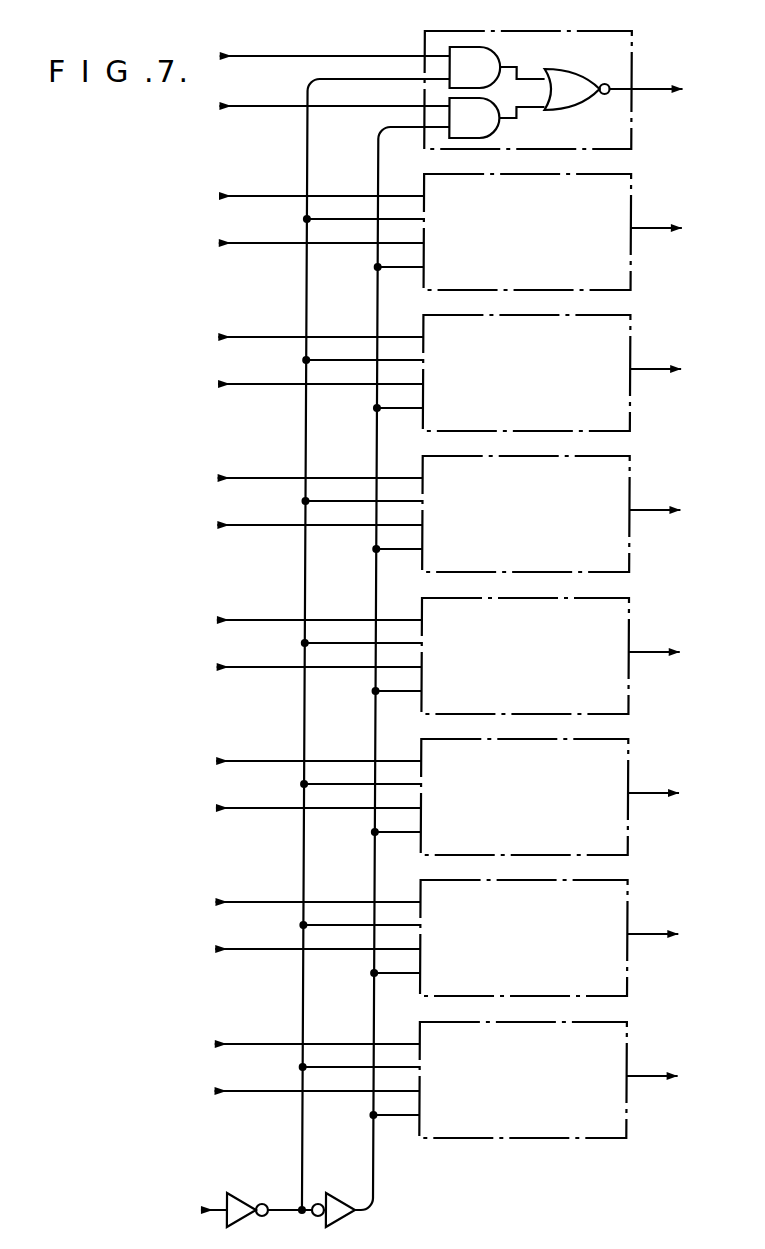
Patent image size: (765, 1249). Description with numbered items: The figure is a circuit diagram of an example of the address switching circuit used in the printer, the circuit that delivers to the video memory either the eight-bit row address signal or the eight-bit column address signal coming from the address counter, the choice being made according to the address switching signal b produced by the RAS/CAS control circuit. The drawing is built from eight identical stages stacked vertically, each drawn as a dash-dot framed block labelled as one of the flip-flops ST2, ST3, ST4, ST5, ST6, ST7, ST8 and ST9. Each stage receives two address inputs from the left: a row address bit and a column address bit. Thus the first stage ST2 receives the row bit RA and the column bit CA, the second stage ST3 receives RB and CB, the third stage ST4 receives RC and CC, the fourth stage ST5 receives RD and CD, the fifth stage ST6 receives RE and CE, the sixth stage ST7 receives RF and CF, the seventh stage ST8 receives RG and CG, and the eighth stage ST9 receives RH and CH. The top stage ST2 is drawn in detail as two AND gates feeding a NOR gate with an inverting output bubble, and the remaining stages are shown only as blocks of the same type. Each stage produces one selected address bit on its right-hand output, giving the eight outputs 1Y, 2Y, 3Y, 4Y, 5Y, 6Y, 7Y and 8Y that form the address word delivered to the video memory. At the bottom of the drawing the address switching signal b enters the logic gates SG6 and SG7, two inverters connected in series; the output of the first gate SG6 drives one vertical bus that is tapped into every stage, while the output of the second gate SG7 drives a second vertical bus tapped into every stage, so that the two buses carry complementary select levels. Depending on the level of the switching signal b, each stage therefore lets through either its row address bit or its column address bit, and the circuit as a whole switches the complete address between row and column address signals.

The flip-flop ST2 is at (533, 90).
The flip-flop ST3 is at (472, 232).
The flip-flop ST4 is at (472, 373).
The flip-flop ST5 is at (471, 514).
The flip-flop ST6 is at (470, 656).
The flip-flop ST7 is at (470, 797).
The flip-flop ST8 is at (469, 938).
The flip-flop ST9 is at (468, 1080).
The logic gate SG6 is at (325, 662).
The logic gate SG7 is at (378, 685).
The address switching signal b is at (195, 1210).
The input signal RA is at (314, 55).
The input signal CA is at (313, 105).
The input signal RB is at (300, 195).
The input signal CB is at (300, 242).
The input signal RC is at (299, 336).
The input signal CC is at (299, 383).
The input signal RD is at (299, 477).
The input signal CD is at (298, 524).
The input signal RE is at (298, 619).
The input signal CE is at (298, 666).
The input signal RF is at (297, 760).
The input signal CF is at (297, 807).
The input signal RG is at (296, 901).
The input signal CG is at (296, 948).
The input signal RH is at (296, 1043).
The input signal CH is at (295, 1090).
The output signal 1Y is at (674, 89).
The output signal 2Y is at (673, 228).
The output signal 3Y is at (672, 369).
The output signal 4Y is at (671, 510).
The output signal 5Y is at (671, 652).
The output signal 6Y is at (670, 793).
The output signal 7Y is at (669, 934).
The output signal 8Y is at (669, 1076).